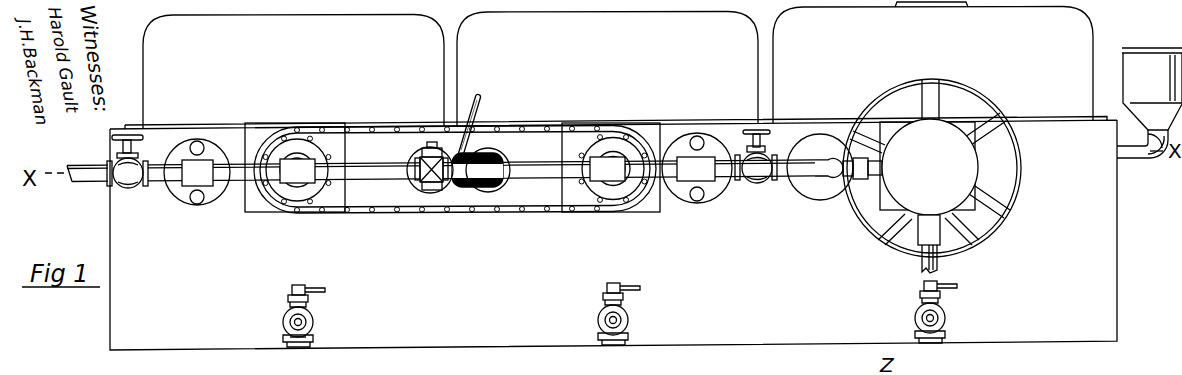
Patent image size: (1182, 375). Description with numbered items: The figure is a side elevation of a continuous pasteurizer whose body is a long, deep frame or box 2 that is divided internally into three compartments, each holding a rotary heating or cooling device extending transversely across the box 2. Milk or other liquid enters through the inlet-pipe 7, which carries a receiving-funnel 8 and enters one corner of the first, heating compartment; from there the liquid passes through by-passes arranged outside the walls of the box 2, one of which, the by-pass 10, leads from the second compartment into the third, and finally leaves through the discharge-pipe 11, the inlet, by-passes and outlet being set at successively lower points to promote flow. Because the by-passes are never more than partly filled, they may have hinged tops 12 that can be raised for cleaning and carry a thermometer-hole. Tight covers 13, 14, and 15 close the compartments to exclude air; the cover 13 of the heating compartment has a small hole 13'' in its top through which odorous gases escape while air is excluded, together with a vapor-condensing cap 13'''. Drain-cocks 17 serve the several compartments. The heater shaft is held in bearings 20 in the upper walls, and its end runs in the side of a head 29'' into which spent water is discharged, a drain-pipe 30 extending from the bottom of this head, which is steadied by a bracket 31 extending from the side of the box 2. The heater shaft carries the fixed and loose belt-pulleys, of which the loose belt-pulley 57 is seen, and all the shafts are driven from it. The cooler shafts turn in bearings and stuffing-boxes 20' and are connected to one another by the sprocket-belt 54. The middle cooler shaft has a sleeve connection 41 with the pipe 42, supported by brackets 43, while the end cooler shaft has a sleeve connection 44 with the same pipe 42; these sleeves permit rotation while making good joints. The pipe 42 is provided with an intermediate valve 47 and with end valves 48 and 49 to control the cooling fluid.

The frame or box 2 is at (613, 234).
The inlet-pipe 7 is at (1130, 160).
The receiving-funnel 8 is at (1124, 62).
The by-pass 10 is at (470, 185).
The discharge-pipe 11 is at (88, 186).
The hinged top 12 is at (484, 156).
The cover 13 is at (933, 65).
The hole 13'' is at (954, 23).
The vapor-condensing cap 13''' is at (1000, 369).
The cover 14 is at (607, 69).
The cover 15 is at (293, 72).
The drain-cock 17 is at (313, 322).
The bearing 20 is at (954, 143).
The bearing and stuffing-box 20' is at (470, 153).
The head 29'' is at (930, 167).
The drain-pipe 30 is at (940, 268).
The bracket 31 is at (825, 182).
The sleeve connection 41 is at (617, 186).
The pipe 42 is at (538, 164).
The bracket 43 is at (208, 196).
The sleeve connection 44 is at (300, 187).
The intermediate valve 47 is at (424, 188).
The end valve 48 is at (760, 190).
The end valve 49 is at (130, 192).
The sprocket-belt 54 is at (532, 214).
The loose belt-pulley 57 is at (1022, 184).